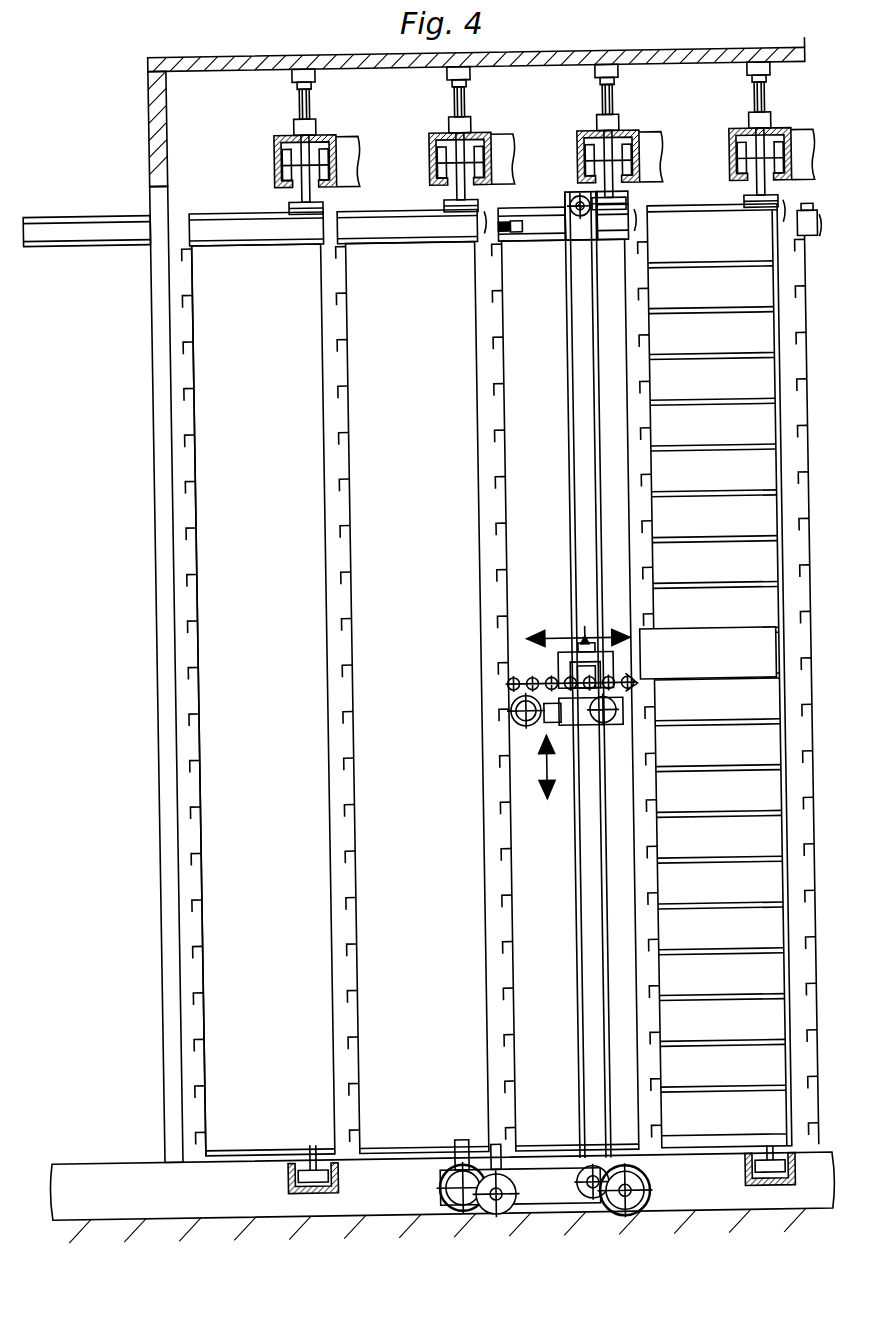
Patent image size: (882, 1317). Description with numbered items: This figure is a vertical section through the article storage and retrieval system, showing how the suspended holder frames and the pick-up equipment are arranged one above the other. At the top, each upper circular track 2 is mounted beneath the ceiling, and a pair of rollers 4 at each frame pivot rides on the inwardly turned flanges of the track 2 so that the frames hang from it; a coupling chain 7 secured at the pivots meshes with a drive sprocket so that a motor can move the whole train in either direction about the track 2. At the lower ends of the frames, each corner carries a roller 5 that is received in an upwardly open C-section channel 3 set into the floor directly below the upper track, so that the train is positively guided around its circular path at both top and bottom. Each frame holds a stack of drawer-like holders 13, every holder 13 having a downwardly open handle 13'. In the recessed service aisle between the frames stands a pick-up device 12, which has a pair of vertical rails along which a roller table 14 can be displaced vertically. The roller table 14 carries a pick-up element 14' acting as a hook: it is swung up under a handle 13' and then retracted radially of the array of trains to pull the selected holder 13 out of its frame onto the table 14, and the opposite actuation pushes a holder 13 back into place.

The upper circular track 2 is at (437, 156).
The C-section channel 3 is at (287, 1156).
The roller 4 is at (282, 156).
The roller 5 is at (303, 1168).
The coupling chain 7 is at (612, 143).
The pick-up device 12 is at (580, 520).
The drawer-like holder 13 is at (716, 674).
The handle 13' is at (229, 700).
The roller table 14 is at (570, 689).
The pick-up element 14' is at (670, 699).